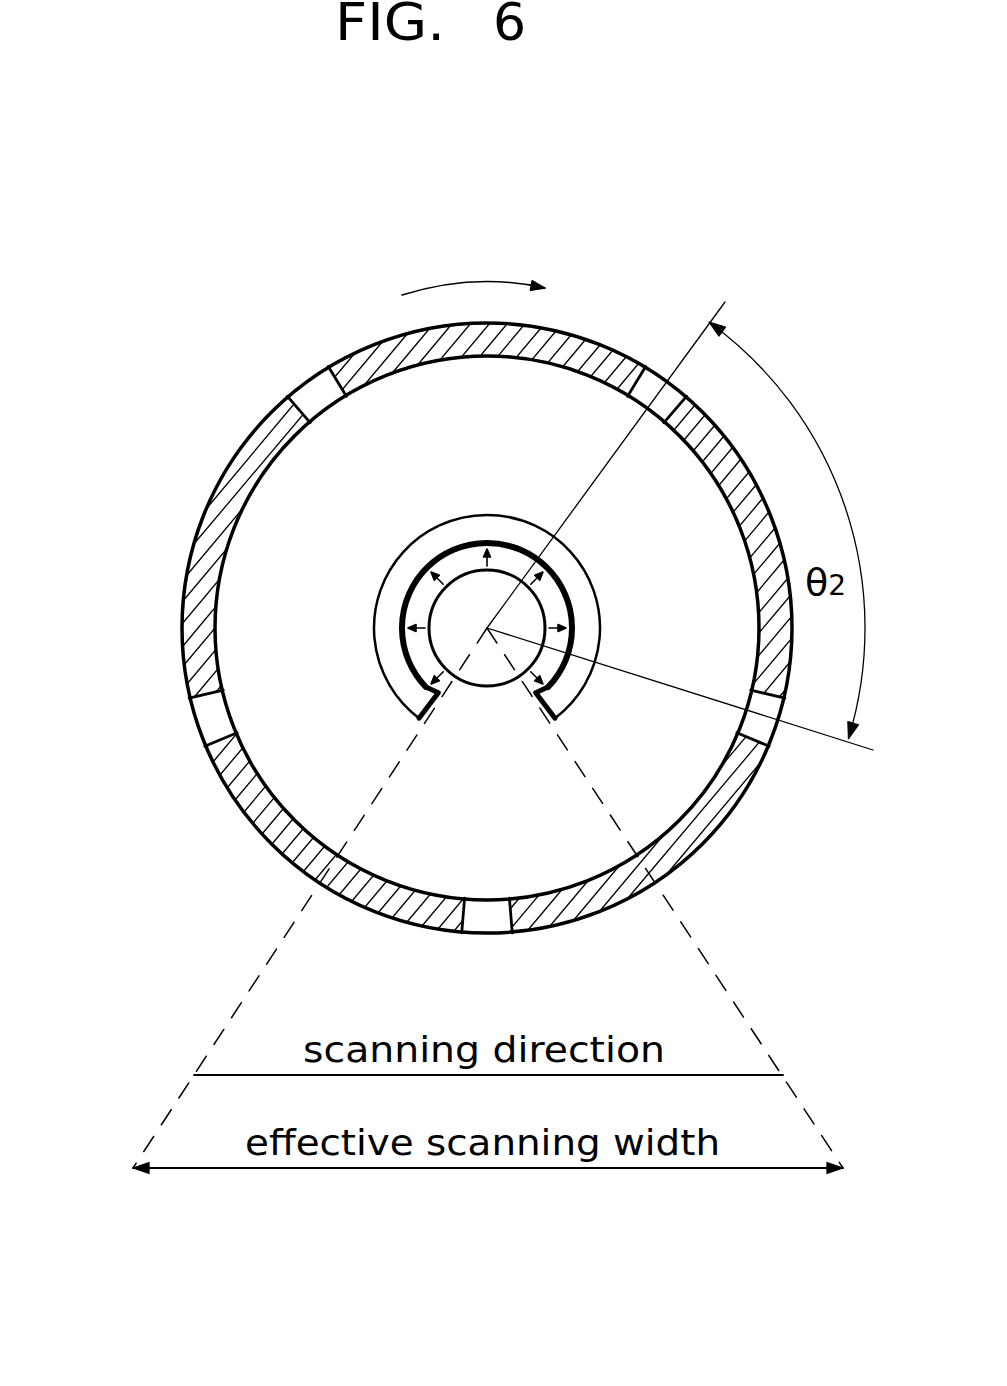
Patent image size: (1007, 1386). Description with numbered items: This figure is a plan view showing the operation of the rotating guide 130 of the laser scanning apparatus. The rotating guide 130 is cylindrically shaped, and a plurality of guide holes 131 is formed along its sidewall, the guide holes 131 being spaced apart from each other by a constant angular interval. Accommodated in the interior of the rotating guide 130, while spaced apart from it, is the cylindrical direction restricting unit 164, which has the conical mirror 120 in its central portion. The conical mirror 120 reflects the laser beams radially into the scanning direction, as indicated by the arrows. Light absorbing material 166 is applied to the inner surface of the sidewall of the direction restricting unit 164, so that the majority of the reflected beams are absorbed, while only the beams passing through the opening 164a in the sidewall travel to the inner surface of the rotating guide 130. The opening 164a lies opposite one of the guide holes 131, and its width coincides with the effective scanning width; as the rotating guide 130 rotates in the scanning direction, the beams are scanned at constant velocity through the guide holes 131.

The rotating guide 130 is at (197, 623).
The guide holes 131 is at (287, 396).
The direction restricting unit 164 is at (393, 588).
The opening 164a is at (503, 707).
The light absorbing material 166 is at (456, 556).
The conical mirror 120 is at (446, 643).